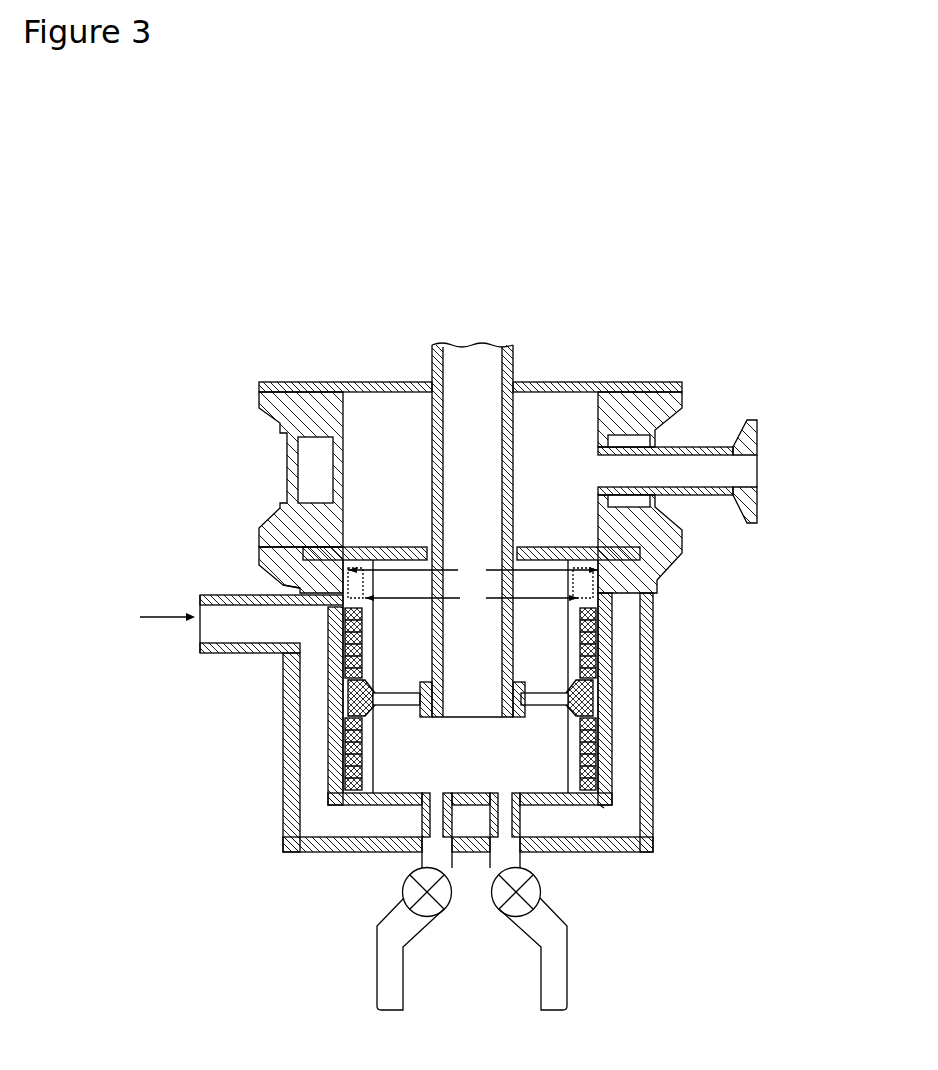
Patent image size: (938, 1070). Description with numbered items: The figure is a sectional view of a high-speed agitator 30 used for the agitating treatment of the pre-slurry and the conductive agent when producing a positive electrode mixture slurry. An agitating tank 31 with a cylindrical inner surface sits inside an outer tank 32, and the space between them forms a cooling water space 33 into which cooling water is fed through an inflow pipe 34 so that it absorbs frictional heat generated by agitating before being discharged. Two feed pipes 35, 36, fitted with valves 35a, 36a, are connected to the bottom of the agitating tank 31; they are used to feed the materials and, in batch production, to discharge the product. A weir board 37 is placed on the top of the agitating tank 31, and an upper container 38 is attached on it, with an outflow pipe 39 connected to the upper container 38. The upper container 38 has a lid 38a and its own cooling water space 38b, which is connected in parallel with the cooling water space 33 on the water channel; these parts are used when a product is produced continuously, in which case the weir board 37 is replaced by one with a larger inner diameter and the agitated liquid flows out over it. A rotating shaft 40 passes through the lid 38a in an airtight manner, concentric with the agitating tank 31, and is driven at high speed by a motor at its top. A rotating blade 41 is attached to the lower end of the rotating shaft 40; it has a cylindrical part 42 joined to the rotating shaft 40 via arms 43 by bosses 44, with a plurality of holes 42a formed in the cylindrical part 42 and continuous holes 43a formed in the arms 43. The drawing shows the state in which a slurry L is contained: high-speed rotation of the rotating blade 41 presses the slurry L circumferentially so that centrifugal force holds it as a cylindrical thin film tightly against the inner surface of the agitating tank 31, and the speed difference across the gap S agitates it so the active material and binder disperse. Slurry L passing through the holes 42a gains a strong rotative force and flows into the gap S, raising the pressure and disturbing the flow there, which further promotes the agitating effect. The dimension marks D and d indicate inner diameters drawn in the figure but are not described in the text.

The high-speed agitator 30 is at (287, 331).
The agitating tank 31 is at (612, 665).
The outer tank 32 is at (648, 757).
The cooling water space 33 is at (633, 803).
The inflow pipe 34 is at (210, 654).
The feed pipe 35 is at (380, 985).
The valve 35a is at (403, 883).
The feed pipe 36 is at (558, 987).
The valve 36a is at (540, 887).
The weir board 37 is at (540, 547).
The upper container 38 is at (680, 417).
The lid 38a is at (575, 383).
The cooling water space 38b is at (320, 468).
The outflow pipe 39 is at (718, 495).
The rotating shaft 40 is at (512, 362).
The rotating blade 41 is at (343, 740).
The cylindrical part 42 is at (343, 753).
The hole 42a is at (343, 662).
The arm 43 is at (417, 687).
The continuous hole 43a is at (393, 705).
The boss 44 is at (518, 718).
The gap S is at (292, 586).
The outer diameter D is at (473, 571).
The inner diameter d is at (471, 598).
The slurry L is at (603, 805).